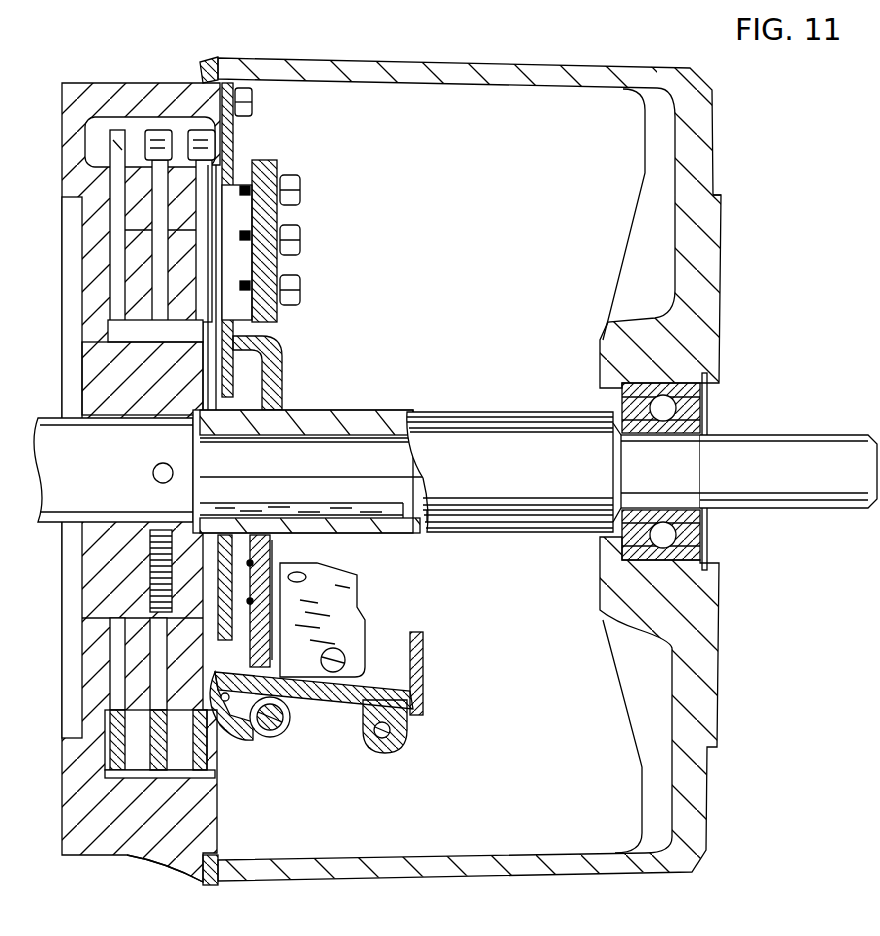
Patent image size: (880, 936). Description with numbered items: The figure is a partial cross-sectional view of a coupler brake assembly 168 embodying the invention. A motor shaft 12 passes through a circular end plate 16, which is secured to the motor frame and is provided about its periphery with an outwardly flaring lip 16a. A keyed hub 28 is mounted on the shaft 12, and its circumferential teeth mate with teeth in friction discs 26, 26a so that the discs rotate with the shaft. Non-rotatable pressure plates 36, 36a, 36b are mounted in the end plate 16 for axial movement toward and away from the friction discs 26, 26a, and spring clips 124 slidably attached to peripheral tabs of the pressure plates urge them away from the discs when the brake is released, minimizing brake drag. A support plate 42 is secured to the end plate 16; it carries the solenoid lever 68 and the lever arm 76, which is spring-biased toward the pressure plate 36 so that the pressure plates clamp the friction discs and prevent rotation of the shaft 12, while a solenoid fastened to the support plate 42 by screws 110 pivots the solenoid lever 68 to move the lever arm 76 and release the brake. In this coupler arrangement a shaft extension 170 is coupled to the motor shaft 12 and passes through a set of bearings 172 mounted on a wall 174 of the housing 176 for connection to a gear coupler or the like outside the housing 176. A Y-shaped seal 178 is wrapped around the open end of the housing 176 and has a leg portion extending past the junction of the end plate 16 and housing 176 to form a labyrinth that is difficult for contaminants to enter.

The motor shaft 12 is at (362, 483).
The end plate 16 is at (80, 857).
The outwardly flaring lip 16a is at (197, 870).
The friction disc 26 is at (177, 760).
The friction disc 26a is at (131, 762).
The keyed hub 28 is at (95, 377).
The pressure plate 36 is at (203, 737).
The pressure plate 36a is at (152, 742).
The pressure plate 36b is at (113, 752).
The support plate 42 is at (235, 138).
The solenoid lever 68 is at (330, 703).
The lever arm 76 is at (270, 350).
The screws 110 is at (300, 285).
The spring clips 124 is at (130, 145).
The coupler brake assembly 168 is at (756, 266).
The shaft extension 170 is at (772, 455).
The bearings 172 is at (697, 352).
The wall 174 is at (712, 258).
The housing 176 is at (741, 186).
The Y-shaped seal 178 is at (205, 886).